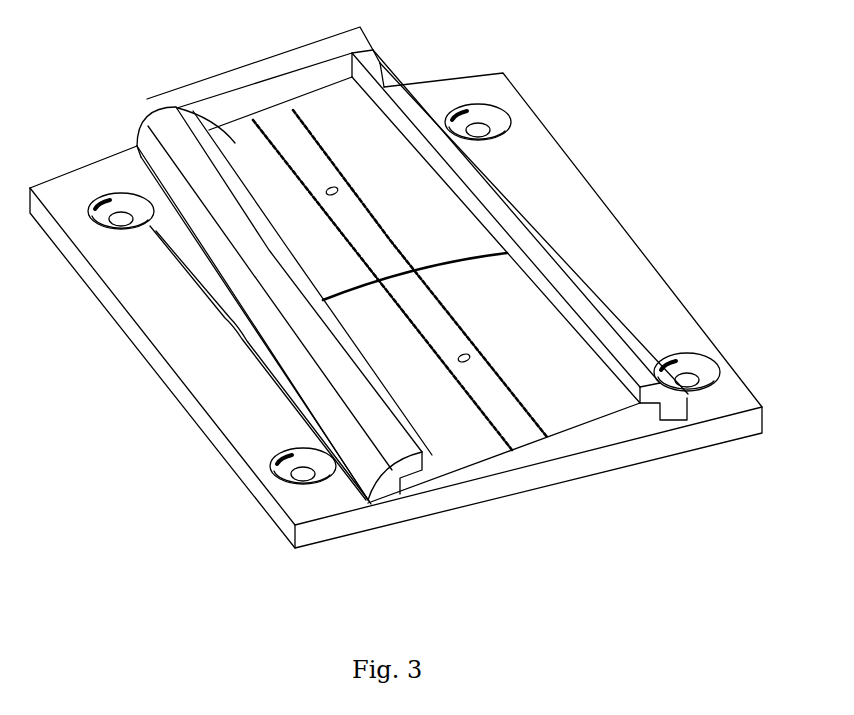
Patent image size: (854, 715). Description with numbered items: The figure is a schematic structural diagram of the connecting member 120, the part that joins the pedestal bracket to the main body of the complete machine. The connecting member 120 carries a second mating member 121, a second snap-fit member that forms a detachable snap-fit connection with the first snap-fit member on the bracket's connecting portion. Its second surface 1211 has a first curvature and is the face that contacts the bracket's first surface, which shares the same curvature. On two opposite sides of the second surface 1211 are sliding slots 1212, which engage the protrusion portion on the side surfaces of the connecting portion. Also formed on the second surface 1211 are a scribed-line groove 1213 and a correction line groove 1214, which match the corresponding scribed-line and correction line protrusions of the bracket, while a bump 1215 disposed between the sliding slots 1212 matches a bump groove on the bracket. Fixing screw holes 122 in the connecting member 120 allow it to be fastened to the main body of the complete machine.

The connecting member 120 is at (430, 299).
The second mating member 121 is at (358, 290).
The fixing screw hole 122 is at (98, 232).
The second surface 1211 is at (178, 108).
The sliding slots 1212 is at (645, 404).
The scribed-line groove 1213 is at (477, 260).
The correction line groove 1214 is at (418, 337).
The bump 1215 is at (338, 192).